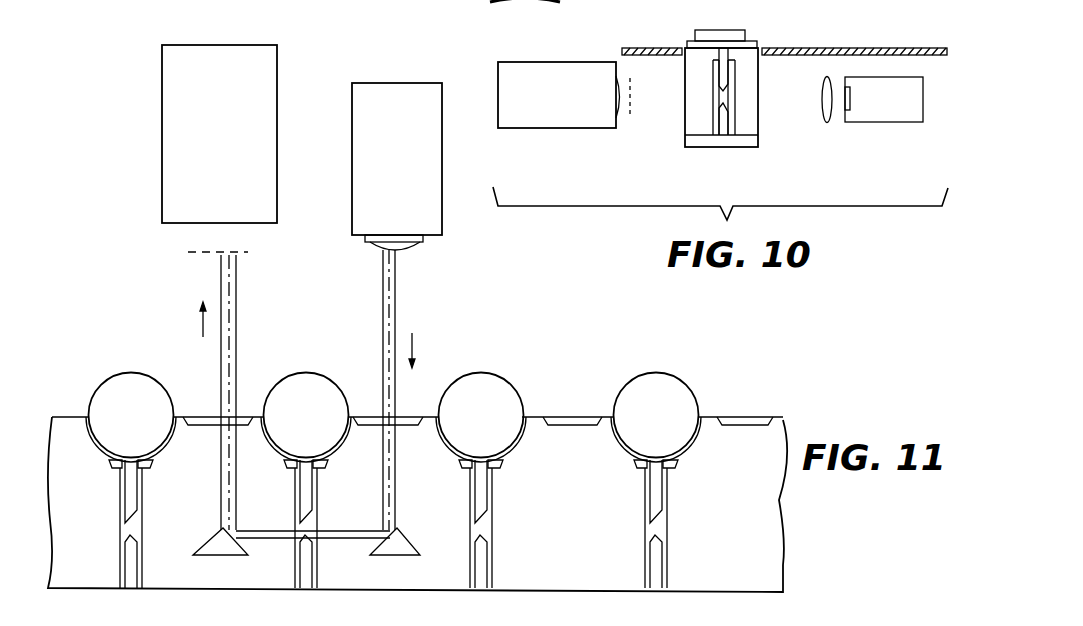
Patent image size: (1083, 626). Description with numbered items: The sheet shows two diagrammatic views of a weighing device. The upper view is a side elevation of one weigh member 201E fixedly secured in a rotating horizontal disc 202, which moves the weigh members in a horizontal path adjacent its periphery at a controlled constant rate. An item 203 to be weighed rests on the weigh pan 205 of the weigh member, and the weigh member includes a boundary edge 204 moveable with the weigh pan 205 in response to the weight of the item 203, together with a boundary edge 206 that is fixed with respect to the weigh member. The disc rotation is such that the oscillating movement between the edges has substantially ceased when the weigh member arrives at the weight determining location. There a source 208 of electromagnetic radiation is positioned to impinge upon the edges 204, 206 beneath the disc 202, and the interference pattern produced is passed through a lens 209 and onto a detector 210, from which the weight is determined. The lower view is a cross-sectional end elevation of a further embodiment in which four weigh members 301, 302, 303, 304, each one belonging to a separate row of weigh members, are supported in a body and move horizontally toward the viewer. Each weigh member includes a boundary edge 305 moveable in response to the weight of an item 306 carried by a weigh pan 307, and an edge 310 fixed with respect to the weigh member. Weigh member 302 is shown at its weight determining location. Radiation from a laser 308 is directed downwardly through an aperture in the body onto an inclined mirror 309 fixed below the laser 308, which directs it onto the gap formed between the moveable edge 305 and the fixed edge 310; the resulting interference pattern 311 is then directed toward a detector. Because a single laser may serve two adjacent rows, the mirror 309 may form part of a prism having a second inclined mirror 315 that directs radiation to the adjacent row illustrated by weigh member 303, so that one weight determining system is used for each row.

In FIG. 10, the weigh member 201E is at (698, 125).
In FIG. 10, the rotating horizontal disc 202 is at (662, 35).
In FIG. 10, the item to be weighed 203 is at (744, 35).
In FIG. 10, the boundary edge 204 is at (719, 90).
In FIG. 10, the weigh pan 205 is at (758, 44).
In FIG. 10, the boundary edge 206 is at (713, 106).
In FIG. 10, the source of electromagnetic radiation 208 is at (558, 129).
In FIG. 10, the lens 209 is at (826, 123).
In FIG. 10, the detector 210 is at (873, 123).
In FIG. 11, the weigh member 301 is at (115, 476).
In FIG. 11, the weigh member 302 is at (290, 476).
In FIG. 11, the weigh member 303 is at (463, 476).
In FIG. 11, the weigh member 304 is at (638, 476).
In FIG. 11, the boundary edge 305 is at (125, 518).
In FIG. 11, the item 306 is at (111, 428).
In FIG. 11, the weigh pan 307 is at (153, 461).
In FIG. 11, the laser 308 is at (442, 232).
In FIG. 11, the inclined mirror 309 is at (372, 553).
In FIG. 11, the edge 310 is at (122, 541).
In FIG. 11, the interference pattern 311 is at (248, 255).
In FIG. 11, the second inclined mirror 315 is at (402, 552).